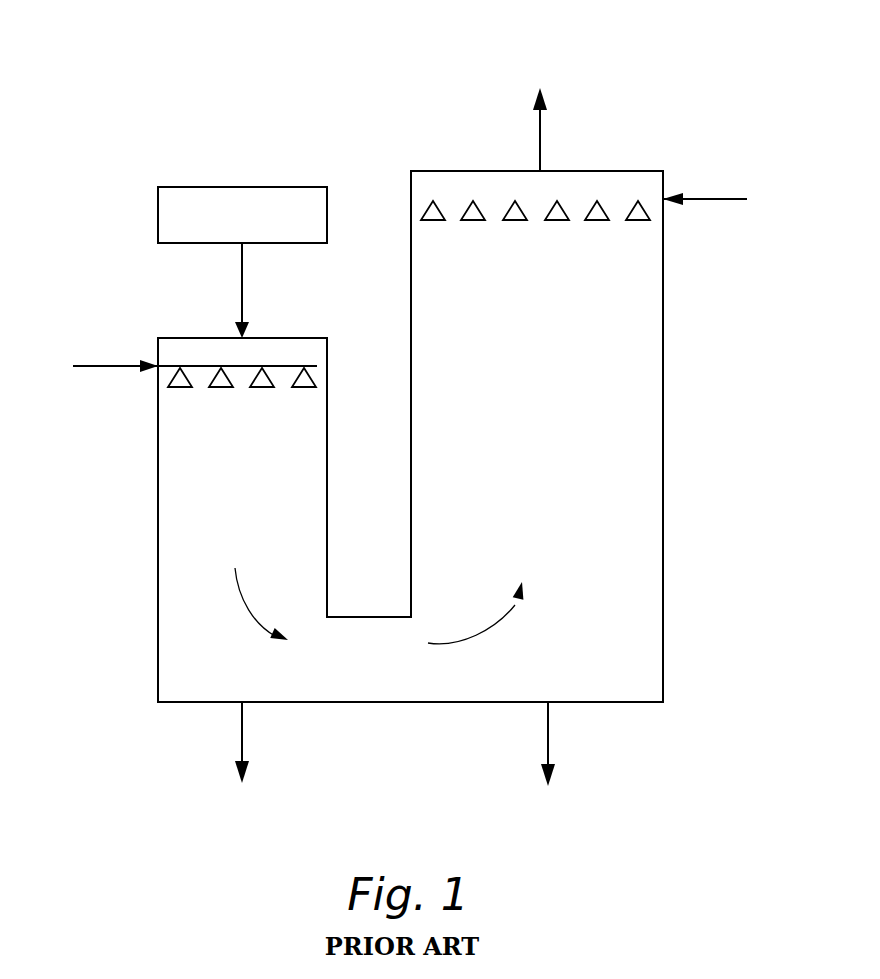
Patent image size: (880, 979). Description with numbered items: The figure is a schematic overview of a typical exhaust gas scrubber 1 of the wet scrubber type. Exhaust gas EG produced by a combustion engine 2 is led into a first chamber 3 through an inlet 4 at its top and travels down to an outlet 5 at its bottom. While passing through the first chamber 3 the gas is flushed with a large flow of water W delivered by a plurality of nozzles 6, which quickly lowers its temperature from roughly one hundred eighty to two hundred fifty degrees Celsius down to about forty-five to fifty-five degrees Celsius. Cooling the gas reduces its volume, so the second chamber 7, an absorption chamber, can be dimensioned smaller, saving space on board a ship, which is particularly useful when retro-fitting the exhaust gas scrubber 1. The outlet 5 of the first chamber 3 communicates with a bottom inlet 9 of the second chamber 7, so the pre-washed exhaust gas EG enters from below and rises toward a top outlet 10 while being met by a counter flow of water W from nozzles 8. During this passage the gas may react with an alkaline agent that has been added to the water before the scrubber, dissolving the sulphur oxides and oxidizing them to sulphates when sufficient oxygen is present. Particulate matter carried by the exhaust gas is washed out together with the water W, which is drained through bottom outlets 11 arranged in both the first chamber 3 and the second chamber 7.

The exhaust gas scrubber 1 is at (679, 105).
The combustion engine 2 is at (158, 203).
The first chamber 3 is at (223, 477).
The inlet 4 is at (240, 336).
The outlet 5 is at (325, 660).
The nozzles 6 is at (260, 378).
The second chamber 7 is at (557, 400).
The nozzles 8 is at (468, 213).
The inlet 9 is at (417, 660).
The outlet 10 is at (536, 171).
The bottom outlets 11 is at (247, 703).